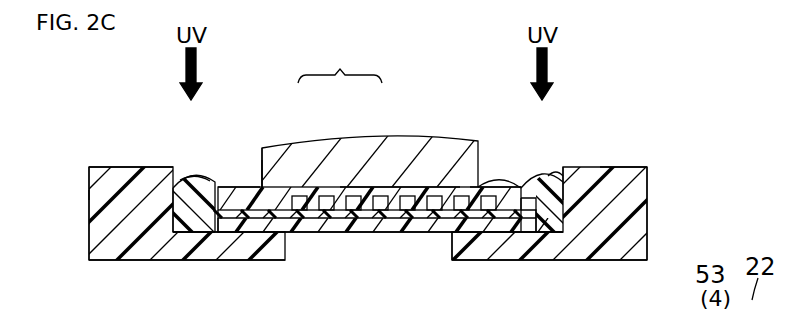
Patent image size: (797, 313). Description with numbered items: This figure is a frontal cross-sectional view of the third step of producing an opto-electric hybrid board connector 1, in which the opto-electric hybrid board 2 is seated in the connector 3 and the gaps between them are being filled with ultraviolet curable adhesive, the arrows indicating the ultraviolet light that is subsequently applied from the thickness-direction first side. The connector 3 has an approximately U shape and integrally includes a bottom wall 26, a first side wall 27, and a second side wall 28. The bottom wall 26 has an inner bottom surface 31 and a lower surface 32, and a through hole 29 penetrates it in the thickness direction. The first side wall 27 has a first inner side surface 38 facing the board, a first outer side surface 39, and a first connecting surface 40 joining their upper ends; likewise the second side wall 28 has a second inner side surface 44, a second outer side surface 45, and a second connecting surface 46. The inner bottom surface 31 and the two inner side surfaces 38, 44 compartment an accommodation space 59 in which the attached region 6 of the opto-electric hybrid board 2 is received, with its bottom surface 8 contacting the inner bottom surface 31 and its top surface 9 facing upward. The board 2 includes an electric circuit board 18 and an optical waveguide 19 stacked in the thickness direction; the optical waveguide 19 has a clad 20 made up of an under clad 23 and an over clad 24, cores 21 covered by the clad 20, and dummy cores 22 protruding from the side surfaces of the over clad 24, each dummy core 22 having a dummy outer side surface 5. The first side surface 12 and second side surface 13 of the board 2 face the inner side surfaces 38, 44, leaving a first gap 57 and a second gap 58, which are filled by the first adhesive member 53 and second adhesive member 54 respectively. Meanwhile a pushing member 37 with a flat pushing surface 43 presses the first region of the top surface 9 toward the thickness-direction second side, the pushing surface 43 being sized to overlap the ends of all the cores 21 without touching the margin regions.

The opto-electric hybrid board connector 1 is at (375, 292).
The opto-electric hybrid board 2 is at (400, 187).
The connector 3 is at (120, 165).
The dummy outer side surface 5 is at (205, 203).
The attached region 6 is at (388, 140).
The bottom surface 8 is at (318, 233).
The top surface 9 is at (417, 195).
The first side surface 12 is at (525, 203).
The second side surface 13 is at (203, 209).
The electric circuit board 18 is at (230, 233).
The optical waveguide 19 is at (270, 187).
The clad 20 is at (340, 62).
The core 21 is at (438, 187).
The dummy core 22 is at (246, 182).
The under clad 23 is at (262, 177).
The over clad 24 is at (357, 187).
The bottom wall 26 is at (508, 263).
The first side wall 27 is at (604, 162).
The second side wall 28 is at (92, 165).
The through hole 29 is at (455, 233).
The inner bottom surface 31 is at (507, 182).
The lower surface 32 is at (200, 263).
The pushing member 37 is at (488, 233).
The first inner side surface 38 is at (562, 170).
The first outer side surface 39 is at (650, 178).
The first connecting surface 40 is at (624, 167).
The pushing surface 43 is at (428, 217).
The second inner side surface 44 is at (174, 178).
The second outer side surface 45 is at (89, 193).
The second connecting surface 46 is at (100, 165).
The first adhesive member 53 is at (552, 167).
The second adhesive member 54 is at (200, 186).
The first gap 57 is at (544, 162).
The second gap 58 is at (209, 182).
The accommodation space 59 is at (258, 160).